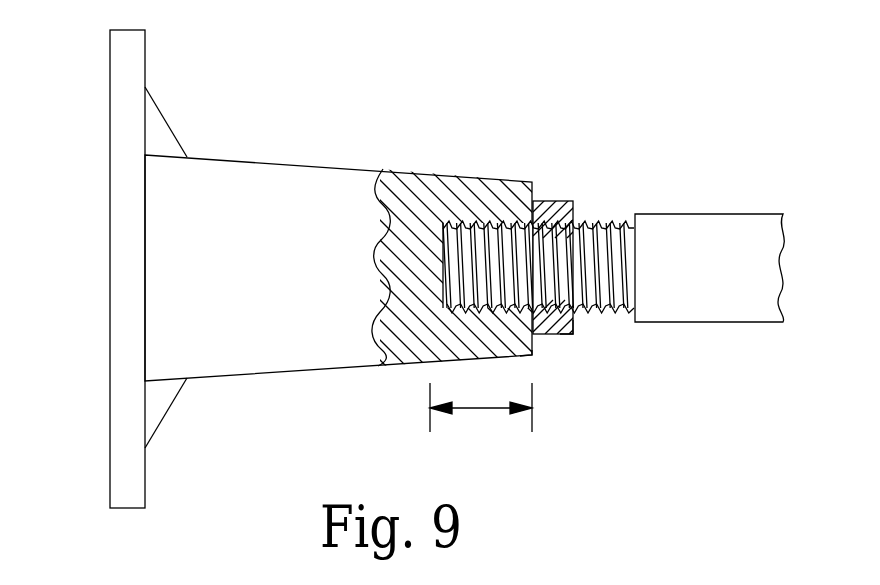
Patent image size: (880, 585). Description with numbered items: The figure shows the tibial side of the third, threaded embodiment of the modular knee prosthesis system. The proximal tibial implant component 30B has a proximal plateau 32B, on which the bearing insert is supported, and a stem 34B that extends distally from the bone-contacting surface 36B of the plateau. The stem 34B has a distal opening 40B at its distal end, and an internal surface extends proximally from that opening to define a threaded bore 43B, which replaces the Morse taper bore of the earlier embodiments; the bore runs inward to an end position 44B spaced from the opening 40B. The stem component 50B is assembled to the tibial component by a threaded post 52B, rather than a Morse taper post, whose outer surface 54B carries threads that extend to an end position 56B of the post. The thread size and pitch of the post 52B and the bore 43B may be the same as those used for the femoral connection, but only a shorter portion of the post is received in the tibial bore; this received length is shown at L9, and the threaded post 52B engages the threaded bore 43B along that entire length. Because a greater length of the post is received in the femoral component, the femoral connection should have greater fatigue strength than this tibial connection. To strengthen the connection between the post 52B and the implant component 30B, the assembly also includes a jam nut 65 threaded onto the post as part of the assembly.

The proximal tibial implant component 30B is at (145, 58).
The proximal plateau 32B is at (110, 243).
The stem 34B is at (310, 183).
The bone-contacting surface 36B is at (145, 318).
The distal opening 40B is at (553, 201).
The threaded bore 43B is at (532, 355).
The end position 44B is at (443, 285).
The stem component 50B is at (753, 316).
The threaded post 52B is at (618, 268).
The outer surface 54B is at (538, 267).
The end position 56B is at (443, 255).
The jam nut 65 is at (573, 334).
The received length L9 is at (481, 407).